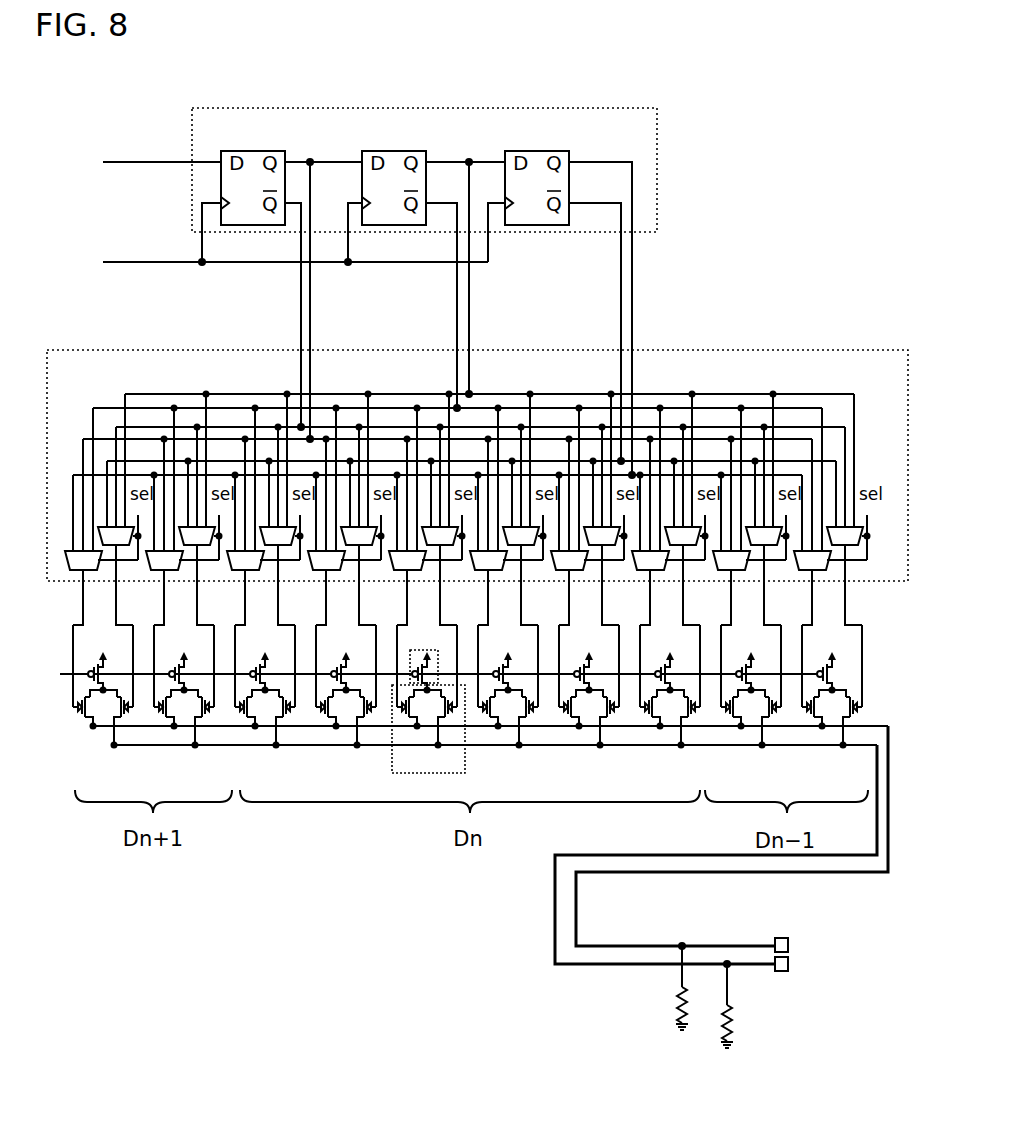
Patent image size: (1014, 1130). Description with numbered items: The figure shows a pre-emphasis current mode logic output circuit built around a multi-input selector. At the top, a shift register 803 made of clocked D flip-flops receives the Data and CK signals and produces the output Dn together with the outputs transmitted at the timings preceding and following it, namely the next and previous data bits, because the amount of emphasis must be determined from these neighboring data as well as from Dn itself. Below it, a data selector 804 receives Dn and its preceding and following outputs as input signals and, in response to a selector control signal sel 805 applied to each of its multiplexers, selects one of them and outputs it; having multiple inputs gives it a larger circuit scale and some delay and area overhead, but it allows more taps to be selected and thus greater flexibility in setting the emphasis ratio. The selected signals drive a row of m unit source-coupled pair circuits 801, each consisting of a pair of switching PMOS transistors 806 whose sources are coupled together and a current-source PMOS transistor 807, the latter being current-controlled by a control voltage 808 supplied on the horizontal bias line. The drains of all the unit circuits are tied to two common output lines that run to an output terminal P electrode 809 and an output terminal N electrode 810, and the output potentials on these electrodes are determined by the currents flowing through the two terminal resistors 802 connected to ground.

The unit source-coupled pair circuit 801 is at (434, 736).
The terminal resistor 802 is at (678, 1011).
The shift register 803 is at (396, 129).
The data selector 804 is at (477, 462).
The selector control signal sel 805 is at (862, 481).
The switching PMOS transistors 806 is at (464, 739).
The current-source PMOS transistor 807 is at (385, 721).
The control voltage 808 is at (60, 674).
The output terminal P electrode 809 is at (788, 946).
The output terminal N electrode 810 is at (788, 966).